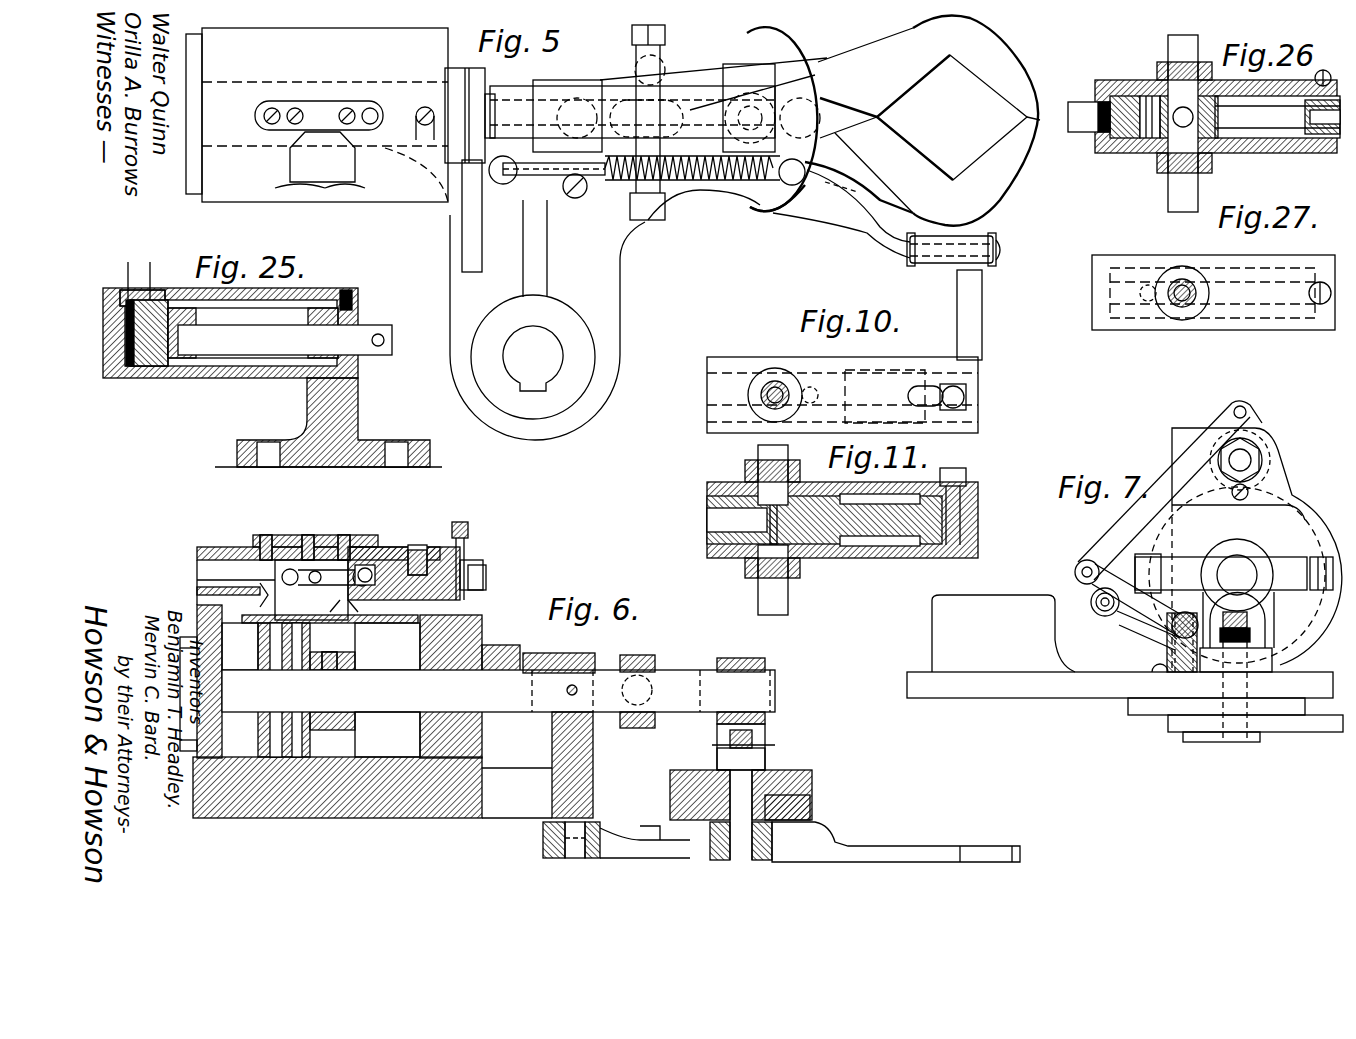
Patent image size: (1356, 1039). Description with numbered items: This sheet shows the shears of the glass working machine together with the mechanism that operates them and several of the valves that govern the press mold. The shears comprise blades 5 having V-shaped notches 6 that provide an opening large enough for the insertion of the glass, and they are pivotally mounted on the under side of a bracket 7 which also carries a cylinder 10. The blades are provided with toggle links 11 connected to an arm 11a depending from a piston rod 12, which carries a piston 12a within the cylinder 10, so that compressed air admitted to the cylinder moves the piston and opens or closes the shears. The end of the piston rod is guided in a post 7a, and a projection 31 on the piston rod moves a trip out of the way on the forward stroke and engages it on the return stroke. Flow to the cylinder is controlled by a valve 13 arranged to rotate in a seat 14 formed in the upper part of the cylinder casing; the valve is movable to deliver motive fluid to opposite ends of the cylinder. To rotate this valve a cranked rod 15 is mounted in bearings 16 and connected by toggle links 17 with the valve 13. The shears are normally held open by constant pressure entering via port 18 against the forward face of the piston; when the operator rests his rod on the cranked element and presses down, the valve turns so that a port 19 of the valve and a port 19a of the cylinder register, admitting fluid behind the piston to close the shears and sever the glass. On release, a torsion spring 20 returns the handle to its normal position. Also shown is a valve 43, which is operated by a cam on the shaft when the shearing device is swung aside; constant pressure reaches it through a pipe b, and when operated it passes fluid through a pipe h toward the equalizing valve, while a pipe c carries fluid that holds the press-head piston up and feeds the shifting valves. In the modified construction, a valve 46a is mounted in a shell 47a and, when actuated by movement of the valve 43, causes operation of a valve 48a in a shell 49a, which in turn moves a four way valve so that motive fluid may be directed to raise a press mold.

In FIG. 5, the shear blades 5 is at (1041, 125).
In FIG. 26, the shear blades 5 is at (1072, 125).
In FIG. 7, the shear blades 5 is at (1220, 735).
In FIG. 6, the shear blades 5 is at (896, 838).
In FIG. 5, the V-shaped notches 6 is at (952, 60).
In FIG. 6, the V-shaped notches 6 is at (965, 846).
In FIG. 5, the bracket 7 is at (582, 370).
In FIG. 7, the bracket 7 is at (1056, 690).
In FIG. 6, the bracket 7 is at (302, 818).
In FIG. 5, the post 7a is at (748, 105).
In FIG. 6, the post 7a is at (746, 658).
In FIG. 5, the cylinder 10 is at (317, 115).
In FIG. 7, the cylinder 10 is at (1245, 550).
In FIG. 6, the cylinder 10 is at (387, 734).
In FIG. 5, the toggle links 11 is at (632, 62).
In FIG. 6, the toggle links 11 is at (657, 841).
In FIG. 6, the arm 11a is at (593, 752).
In FIG. 5, the piston rod 12 is at (632, 112).
In FIG. 7, the piston rod 12 is at (1234, 512).
In FIG. 6, the piston rod 12 is at (498, 691).
In FIG. 6, the piston 12a is at (310, 640).
In FIG. 6, the valve 13 is at (400, 555).
In FIG. 6, the seat 14 is at (248, 548).
In FIG. 5, the cranked rod 15 is at (856, 205).
In FIG. 7, the cranked rod 15 is at (1128, 615).
In FIG. 5, the bearings 16 is at (503, 185).
In FIG. 5, the toggle links 17 is at (460, 104).
In FIG. 7, the toggle links 17 is at (1228, 422).
In FIG. 6, the toggle links 17 is at (466, 540).
In FIG. 6, the port 18 is at (415, 618).
In FIG. 6, the port 19 is at (300, 565).
In FIG. 6, the port 19a is at (245, 612).
In FIG. 5, the torsion spring 20 is at (702, 192).
In FIG. 7, the torsion spring 20 is at (1170, 640).
In FIG. 5, the projection 31 is at (660, 222).
In FIG. 7, the projection 31 is at (1158, 570).
In FIG. 6, the projection 31 is at (655, 666).
In FIG. 10, the valve 43 is at (844, 351).
In FIG. 11, the valve 43 is at (862, 532).
In FIG. 26, the valve 46a is at (1112, 154).
In FIG. 27, the valve 46a is at (1130, 325).
In FIG. 26, the shell 47a is at (1252, 154).
In FIG. 27, the shell 47a is at (1240, 330).
In FIG. 25, the valve 48a is at (165, 378).
In FIG. 25, the shell 49a is at (305, 387).
In FIG. 25, the pipe c is at (128, 270).
In FIG. 26, the pipe c is at (1175, 44).
In FIG. 26, the pipe h is at (1085, 138).
In FIG. 11, the pipe h is at (770, 452).
In FIG. 11, the pipe b is at (770, 598).